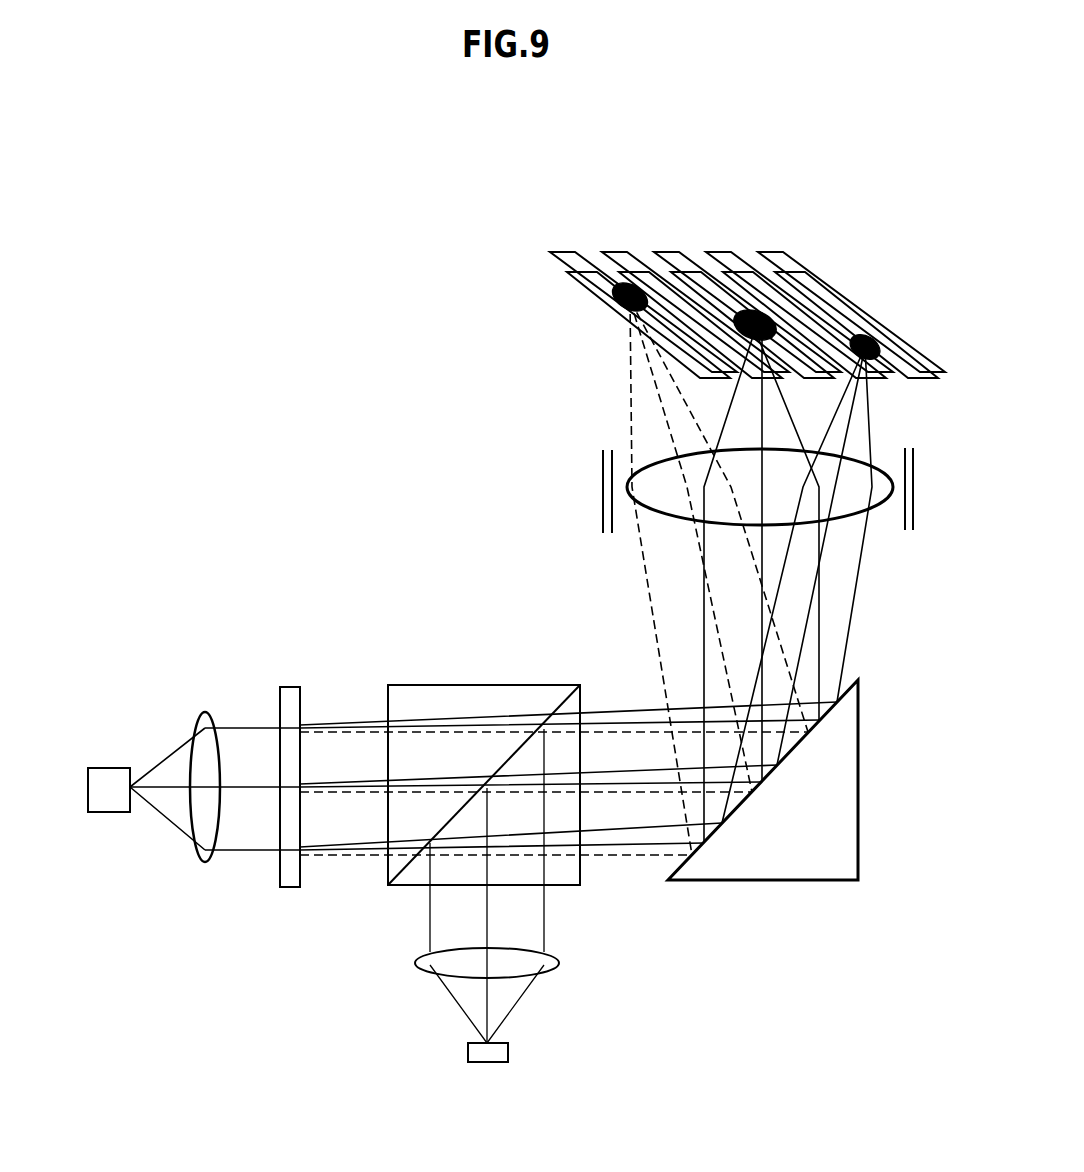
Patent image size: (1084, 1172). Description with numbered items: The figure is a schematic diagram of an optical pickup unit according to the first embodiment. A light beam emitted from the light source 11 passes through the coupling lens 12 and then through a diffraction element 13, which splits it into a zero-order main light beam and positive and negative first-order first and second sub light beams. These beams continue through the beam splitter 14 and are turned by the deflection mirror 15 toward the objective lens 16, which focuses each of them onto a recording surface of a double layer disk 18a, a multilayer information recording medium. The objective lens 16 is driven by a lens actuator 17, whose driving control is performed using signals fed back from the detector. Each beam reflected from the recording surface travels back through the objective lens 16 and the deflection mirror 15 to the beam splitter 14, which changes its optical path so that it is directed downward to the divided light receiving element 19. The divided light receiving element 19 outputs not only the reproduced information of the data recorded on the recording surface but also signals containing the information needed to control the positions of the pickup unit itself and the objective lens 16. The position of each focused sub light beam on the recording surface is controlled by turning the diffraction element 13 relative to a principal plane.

The light source 11 is at (102, 768).
The coupling lens 12 is at (203, 862).
The diffraction element 13 is at (291, 687).
The beam splitter 14 is at (476, 685).
The deflection mirror 15 is at (766, 882).
The objective lens 16 is at (648, 457).
The lens actuator 17 is at (600, 478).
The double layer disk 18a is at (648, 252).
The divided light receiving element 19 is at (508, 1052).